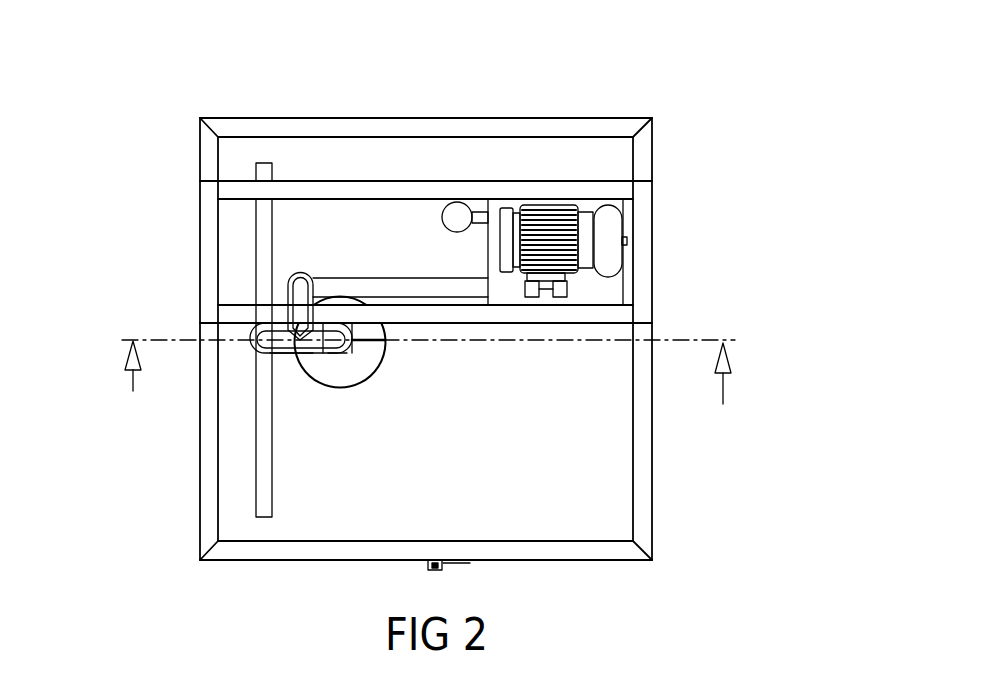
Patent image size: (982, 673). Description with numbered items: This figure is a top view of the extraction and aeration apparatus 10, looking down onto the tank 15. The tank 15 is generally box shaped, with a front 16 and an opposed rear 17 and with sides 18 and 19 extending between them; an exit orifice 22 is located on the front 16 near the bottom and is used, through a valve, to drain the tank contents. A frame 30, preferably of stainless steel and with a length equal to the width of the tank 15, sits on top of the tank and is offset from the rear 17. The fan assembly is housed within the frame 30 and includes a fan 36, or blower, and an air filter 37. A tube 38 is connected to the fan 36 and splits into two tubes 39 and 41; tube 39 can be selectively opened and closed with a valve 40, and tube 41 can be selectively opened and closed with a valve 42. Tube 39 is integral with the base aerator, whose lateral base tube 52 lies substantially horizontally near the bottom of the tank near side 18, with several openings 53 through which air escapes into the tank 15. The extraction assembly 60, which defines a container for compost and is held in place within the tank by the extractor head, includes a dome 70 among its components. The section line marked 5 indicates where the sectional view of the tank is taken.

The extraction and aeration apparatus 10 is at (695, 85).
The tank 15 is at (650, 475).
The first side (front) 16 is at (585, 562).
The second side (rear) 17 is at (533, 118).
The side 18 is at (200, 250).
The side 19 is at (653, 235).
The exit orifice 22 is at (443, 568).
The frame 30 is at (437, 334).
The fan 36 is at (550, 203).
The air filter 37 is at (453, 215).
The tube 38 is at (452, 280).
The tube 39 is at (262, 337).
The valve 40 is at (293, 330).
The tube 41 is at (353, 367).
The valve 42 is at (352, 352).
The lateral base tube 52 is at (265, 163).
The openings 53 is at (257, 242).
The extraction assembly 60 is at (308, 376).
The dome 70 is at (333, 373).
The section line 5- 5 is at (428, 396).